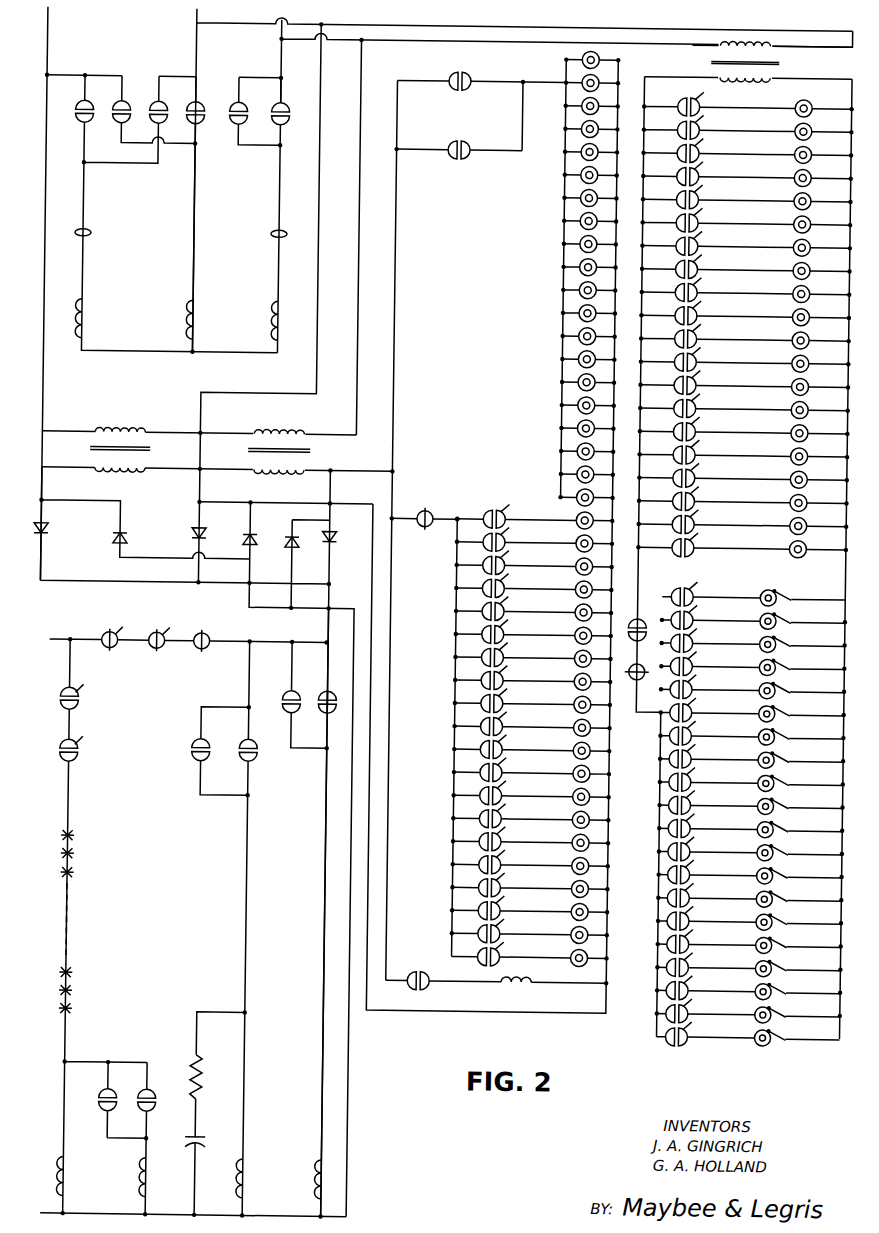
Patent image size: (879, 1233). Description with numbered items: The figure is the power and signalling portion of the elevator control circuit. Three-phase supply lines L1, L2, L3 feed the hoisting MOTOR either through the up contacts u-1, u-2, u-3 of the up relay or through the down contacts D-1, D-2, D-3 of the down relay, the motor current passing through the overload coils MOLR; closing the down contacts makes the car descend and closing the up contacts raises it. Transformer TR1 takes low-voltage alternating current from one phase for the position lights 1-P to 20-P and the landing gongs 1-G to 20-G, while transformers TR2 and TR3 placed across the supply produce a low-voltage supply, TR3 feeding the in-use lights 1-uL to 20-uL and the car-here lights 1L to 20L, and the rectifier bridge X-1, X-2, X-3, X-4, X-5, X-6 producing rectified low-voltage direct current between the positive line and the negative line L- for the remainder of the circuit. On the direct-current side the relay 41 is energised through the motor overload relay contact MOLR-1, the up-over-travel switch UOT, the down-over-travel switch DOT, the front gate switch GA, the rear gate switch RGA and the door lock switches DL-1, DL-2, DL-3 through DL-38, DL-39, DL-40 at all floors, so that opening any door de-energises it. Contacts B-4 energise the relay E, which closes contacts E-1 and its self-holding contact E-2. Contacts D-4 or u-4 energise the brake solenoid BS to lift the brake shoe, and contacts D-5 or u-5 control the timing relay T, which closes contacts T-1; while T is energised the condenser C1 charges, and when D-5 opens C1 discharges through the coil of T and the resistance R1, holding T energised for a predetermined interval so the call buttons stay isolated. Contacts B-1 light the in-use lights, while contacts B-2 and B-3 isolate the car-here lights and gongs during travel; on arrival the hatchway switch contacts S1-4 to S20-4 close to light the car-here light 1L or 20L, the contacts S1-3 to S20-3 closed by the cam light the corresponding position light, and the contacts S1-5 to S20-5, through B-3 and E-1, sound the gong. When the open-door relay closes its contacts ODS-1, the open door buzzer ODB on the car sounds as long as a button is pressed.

The three-phase supply line L1 is at (45, 290).
The three-phase supply line L2 is at (519, 180).
The three-phase supply line L3 is at (496, 54).
The up relay contact u-1 is at (91, 98).
The down relay contact D-1 is at (130, 99).
The down relay contact D-2 is at (167, 99).
The up relay contact u-2 is at (204, 100).
The up relay contact u-3 is at (246, 100).
The down relay contact D-3 is at (292, 102).
The motor overload coil MOLR is at (181, 233).
The motor MOTOR is at (176, 320).
The transformer TR1 is at (749, 61).
The transformer TR2 is at (148, 450).
The transformer TR3 is at (321, 452).
The rectifier X-1 is at (52, 528).
The rectifier X-2 is at (131, 539).
The rectifier X-3 is at (210, 533).
The rectifier X-4 is at (260, 536).
The rectifier X-5 is at (302, 547).
The rectifier X-6 is at (340, 536).
The negative line L- is at (182, 1216).
The down-over-travel switch DOT is at (109, 646).
The up-over-travel switch UOT is at (157, 647).
The motor overload relay contact MOLR-1 is at (209, 650).
The front gate switch GA is at (79, 697).
The rear gate switch RGA is at (84, 749).
The door lock switch DL-1 is at (47, 836).
The door lock switch DL-2 is at (47, 854).
The door lock switch DL-3 is at (47, 873).
The door lock switch DL-38 is at (41, 972).
The door lock switch DL-39 is at (41, 990).
The door lock switch DL-40 is at (41, 1008).
The down relay contact D-4 is at (299, 694).
The up relay contact u-4 is at (335, 694).
The down relay contact D-5 is at (189, 749).
The up relay contact u-5 is at (258, 750).
The relay B contact B-4 is at (113, 1086).
The self-holding contact E-2 is at (154, 1086).
The relay 41 is at (72, 1176).
The relay E is at (151, 1177).
The resistance R1 is at (206, 1077).
The condenser C1 is at (204, 1134).
The timing relay T is at (250, 1178).
The brake solenoid BS is at (302, 1179).
The timing relay contact T-1 is at (482, 103).
The relay B contact B-1 is at (458, 142).
The relay B contact B-2 is at (424, 513).
The in-use light 20-uL is at (587, 53).
The in-use light 1-uL is at (559, 496).
The car-here light 20L is at (583, 516).
The car-here light 1L is at (580, 953).
The hatchway switch contact S20-4 is at (516, 513).
The hatchway switch contact S1-4 is at (510, 953).
The open door relay contact ODS-1 is at (443, 989).
The open door buzzer ODB is at (555, 993).
The hatchway switch contact S20-3 is at (719, 104).
The hatchway switch contact S1-3 is at (713, 545).
The position light 20-P is at (824, 105).
The position light 1-P is at (818, 547).
The relay E contact E-1 is at (630, 622).
The relay B contact B-3 is at (631, 666).
The hatchway switch contact S20-5 is at (711, 594).
The hatchway switch contact S1-5 is at (705, 1033).
The gong 20-G is at (802, 596).
The gong 1-G is at (796, 1033).